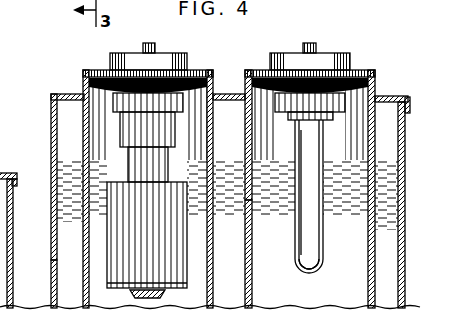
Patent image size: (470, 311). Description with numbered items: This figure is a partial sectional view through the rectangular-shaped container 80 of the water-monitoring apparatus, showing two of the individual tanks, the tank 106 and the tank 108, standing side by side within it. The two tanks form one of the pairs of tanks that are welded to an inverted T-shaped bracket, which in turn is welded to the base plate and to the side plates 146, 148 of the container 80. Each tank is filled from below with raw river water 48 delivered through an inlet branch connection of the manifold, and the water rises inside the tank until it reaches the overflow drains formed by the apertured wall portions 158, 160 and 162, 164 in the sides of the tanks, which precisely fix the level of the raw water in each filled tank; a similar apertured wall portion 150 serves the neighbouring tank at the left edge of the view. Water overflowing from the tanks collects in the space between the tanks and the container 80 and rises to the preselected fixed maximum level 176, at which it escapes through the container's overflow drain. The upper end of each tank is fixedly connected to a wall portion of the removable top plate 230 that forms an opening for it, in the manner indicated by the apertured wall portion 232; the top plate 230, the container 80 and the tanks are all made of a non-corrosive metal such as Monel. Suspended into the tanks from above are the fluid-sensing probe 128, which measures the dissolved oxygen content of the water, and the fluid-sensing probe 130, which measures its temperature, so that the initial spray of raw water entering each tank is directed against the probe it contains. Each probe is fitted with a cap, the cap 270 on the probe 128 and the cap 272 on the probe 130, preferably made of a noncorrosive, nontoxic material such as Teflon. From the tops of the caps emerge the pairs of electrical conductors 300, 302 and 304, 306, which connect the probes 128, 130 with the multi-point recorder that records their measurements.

The raw river water 48 is at (64, 190).
The container 80 is at (38, 109).
The tank 106 is at (252, 285).
The tank 108 is at (82, 253).
The fluid-sensing probe 128 is at (175, 252).
The fluid-sensing probe 130 is at (313, 265).
The side plate 146 is at (52, 292).
The side plate 148 is at (402, 246).
The apertured wall portion 150 is at (10, 222).
The apertured wall portion 158 is at (381, 150).
The apertured wall portion 160 is at (240, 142).
The apertured wall portion 162 is at (218, 140).
The apertured wall portion 164 is at (85, 147).
The preselected fixed maximum level 176 is at (11, 237).
The removable top plate 230 is at (62, 94).
The apertured wall portion 232 is at (15, 162).
The cap 270 is at (97, 70).
The cap 272 is at (357, 72).
The electrical conductor 300 is at (142, 46).
The electrical conductor 302 is at (156, 45).
The electrical conductor 304 is at (305, 47).
The electrical conductor 306 is at (318, 45).